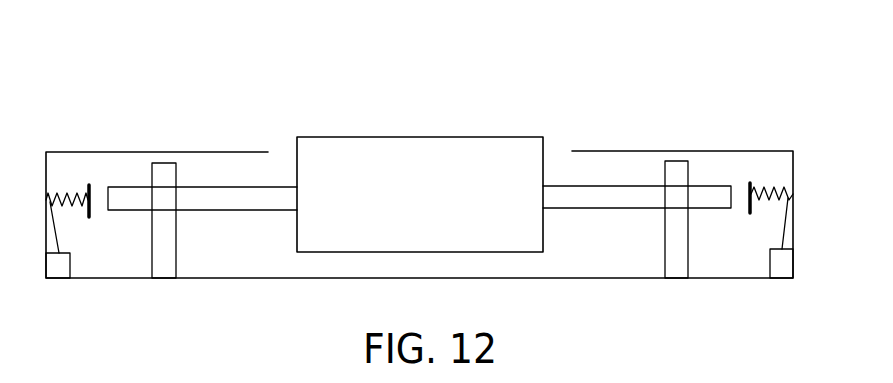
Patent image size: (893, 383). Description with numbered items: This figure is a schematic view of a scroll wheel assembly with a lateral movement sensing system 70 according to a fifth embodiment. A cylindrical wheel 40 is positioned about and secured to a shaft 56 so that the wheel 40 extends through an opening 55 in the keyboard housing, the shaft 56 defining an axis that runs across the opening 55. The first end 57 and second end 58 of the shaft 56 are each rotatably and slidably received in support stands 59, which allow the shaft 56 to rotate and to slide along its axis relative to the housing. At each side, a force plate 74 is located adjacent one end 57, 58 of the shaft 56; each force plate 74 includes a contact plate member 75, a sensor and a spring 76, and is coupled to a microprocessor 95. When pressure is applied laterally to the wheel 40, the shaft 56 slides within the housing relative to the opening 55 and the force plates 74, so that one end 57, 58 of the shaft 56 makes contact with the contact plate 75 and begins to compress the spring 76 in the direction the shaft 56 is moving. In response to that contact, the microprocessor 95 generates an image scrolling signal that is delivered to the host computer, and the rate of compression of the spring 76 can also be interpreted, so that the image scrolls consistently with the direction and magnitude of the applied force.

The wheel 40 is at (453, 132).
The opening 55 is at (289, 144).
The shaft 56 is at (580, 186).
The first end 57 is at (108, 208).
The second end 58 is at (731, 198).
The support stands 59 is at (175, 163).
The lateral movement sensing system 70 is at (100, 262).
The force plate 74 is at (91, 192).
The contact plate member 75 is at (71, 196).
The spring 76 is at (67, 192).
The microprocessor 95 is at (47, 272).